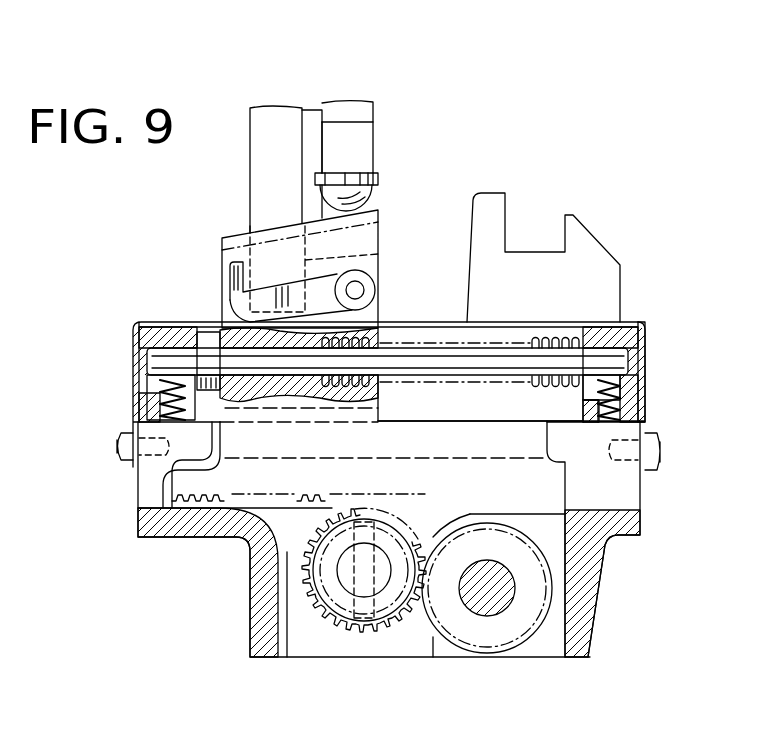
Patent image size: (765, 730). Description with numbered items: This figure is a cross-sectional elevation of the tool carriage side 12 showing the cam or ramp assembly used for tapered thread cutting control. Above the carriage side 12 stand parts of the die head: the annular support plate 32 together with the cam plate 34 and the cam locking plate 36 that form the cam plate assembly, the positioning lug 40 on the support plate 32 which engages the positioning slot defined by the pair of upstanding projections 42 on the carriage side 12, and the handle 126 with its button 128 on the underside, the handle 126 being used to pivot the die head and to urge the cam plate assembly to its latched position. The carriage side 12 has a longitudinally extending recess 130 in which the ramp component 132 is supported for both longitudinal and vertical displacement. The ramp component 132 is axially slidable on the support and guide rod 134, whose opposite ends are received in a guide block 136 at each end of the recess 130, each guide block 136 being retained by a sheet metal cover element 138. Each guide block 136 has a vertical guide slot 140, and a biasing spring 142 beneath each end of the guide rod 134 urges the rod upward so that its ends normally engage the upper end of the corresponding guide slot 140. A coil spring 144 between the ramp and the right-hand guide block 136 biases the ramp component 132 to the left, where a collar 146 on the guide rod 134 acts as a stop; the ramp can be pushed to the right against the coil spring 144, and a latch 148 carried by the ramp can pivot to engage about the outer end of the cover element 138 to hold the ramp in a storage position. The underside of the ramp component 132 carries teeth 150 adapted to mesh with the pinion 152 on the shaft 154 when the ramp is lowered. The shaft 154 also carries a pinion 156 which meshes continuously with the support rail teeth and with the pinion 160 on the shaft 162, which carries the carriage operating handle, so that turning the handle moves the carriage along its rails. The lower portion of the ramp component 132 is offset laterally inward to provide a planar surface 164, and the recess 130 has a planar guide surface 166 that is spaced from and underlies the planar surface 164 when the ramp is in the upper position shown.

The carriage side 12 is at (621, 541).
The support plate 32 is at (270, 122).
The cam plate 34 is at (312, 123).
The cam locking plate 36 is at (360, 113).
The positioning lug 40 is at (250, 222).
The upstanding projections 42 is at (228, 277).
The handle 126 is at (358, 147).
The button 128 is at (367, 188).
The recess 130 is at (430, 335).
The ramp component 132 is at (360, 234).
The guide rod 134 is at (475, 360).
The guide block 136 is at (160, 328).
The cover element 138 is at (643, 352).
The guide slot 140 is at (152, 378).
The biasing spring 142 is at (345, 264).
The coil spring 144 is at (573, 340).
The collar 146 is at (210, 342).
The latch 148 is at (232, 278).
The teeth 150 is at (245, 498).
The pinion 152 is at (317, 560).
The shaft 154 is at (358, 577).
The pinion 156 is at (382, 637).
The pinion 160 is at (520, 612).
The shaft 162 is at (477, 602).
The planar surface 164 is at (265, 407).
The planar guide surface 166 is at (467, 421).